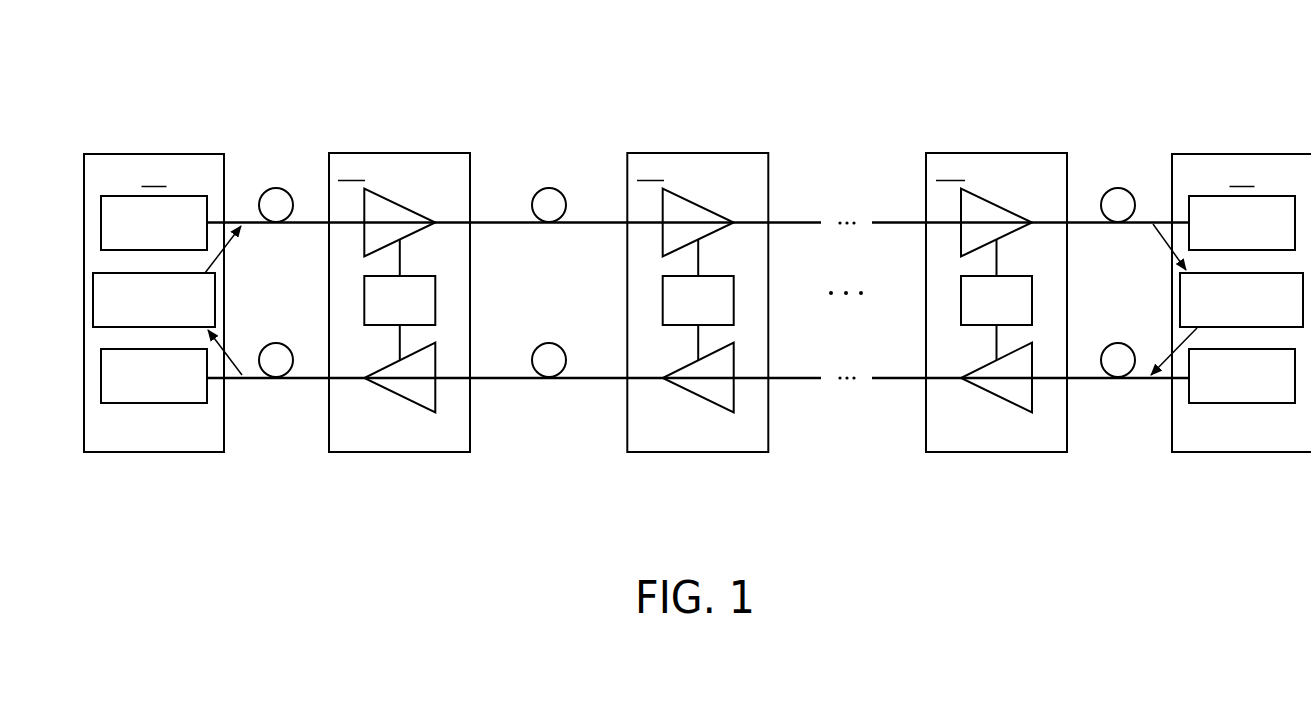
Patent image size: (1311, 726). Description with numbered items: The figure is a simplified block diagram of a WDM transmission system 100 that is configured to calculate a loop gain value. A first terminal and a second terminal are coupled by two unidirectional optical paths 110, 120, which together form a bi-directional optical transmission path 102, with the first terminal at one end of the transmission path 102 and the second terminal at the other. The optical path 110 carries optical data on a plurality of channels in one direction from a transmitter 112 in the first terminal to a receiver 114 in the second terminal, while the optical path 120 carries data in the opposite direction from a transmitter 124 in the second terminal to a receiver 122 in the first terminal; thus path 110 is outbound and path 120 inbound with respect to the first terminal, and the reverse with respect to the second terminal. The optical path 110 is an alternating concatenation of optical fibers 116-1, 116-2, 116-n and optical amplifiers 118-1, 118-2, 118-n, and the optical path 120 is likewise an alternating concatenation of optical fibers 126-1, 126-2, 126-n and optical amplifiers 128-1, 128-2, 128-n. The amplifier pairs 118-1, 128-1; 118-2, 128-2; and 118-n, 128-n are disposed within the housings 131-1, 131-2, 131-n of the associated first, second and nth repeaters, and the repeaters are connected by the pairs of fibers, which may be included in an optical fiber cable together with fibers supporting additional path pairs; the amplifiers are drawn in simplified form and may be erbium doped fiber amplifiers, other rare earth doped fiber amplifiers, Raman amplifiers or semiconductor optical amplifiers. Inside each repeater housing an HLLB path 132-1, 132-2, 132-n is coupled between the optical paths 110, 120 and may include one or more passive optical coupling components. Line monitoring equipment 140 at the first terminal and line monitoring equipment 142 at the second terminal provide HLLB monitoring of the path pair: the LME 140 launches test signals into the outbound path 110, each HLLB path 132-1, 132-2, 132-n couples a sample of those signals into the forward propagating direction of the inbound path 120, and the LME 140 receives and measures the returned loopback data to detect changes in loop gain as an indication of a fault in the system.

The WDM transmission system 100 is at (627, 72).
The bi-directional optical transmission path 102 is at (786, 479).
The optical path 110 is at (541, 174).
The optical path 120 is at (523, 422).
The transmitter 112 is at (137, 246).
The receiver 122 is at (137, 398).
The line monitoring equipment 140 is at (138, 320).
The receiver 114 is at (1226, 246).
The transmitter 124 is at (1226, 398).
The line monitoring equipment 142 is at (1226, 320).
The optical fiber 116-1 is at (262, 224).
The optical fiber 116-2 is at (485, 224).
The optical fiber 116-n is at (1077, 224).
The optical fiber 126-1 is at (257, 379).
The optical fiber 126-2 is at (492, 379).
The optical fiber 126-n is at (1080, 379).
The optical amplifier 118-1 is at (370, 231).
The optical amplifier 118-2 is at (667, 231).
The optical amplifier 118-n is at (966, 231).
The optical amplifier 128-1 is at (386, 386).
The optical amplifier 128-2 is at (684, 386).
The optical amplifier 128-n is at (982, 386).
The HLLB path 132-1 is at (423, 312).
The HLLB path 132-2 is at (675, 312).
The HLLB path 132-n is at (973, 312).
The housing 131-1 is at (420, 153).
The housing 131-2 is at (733, 153).
The housing 131-n is at (1018, 153).